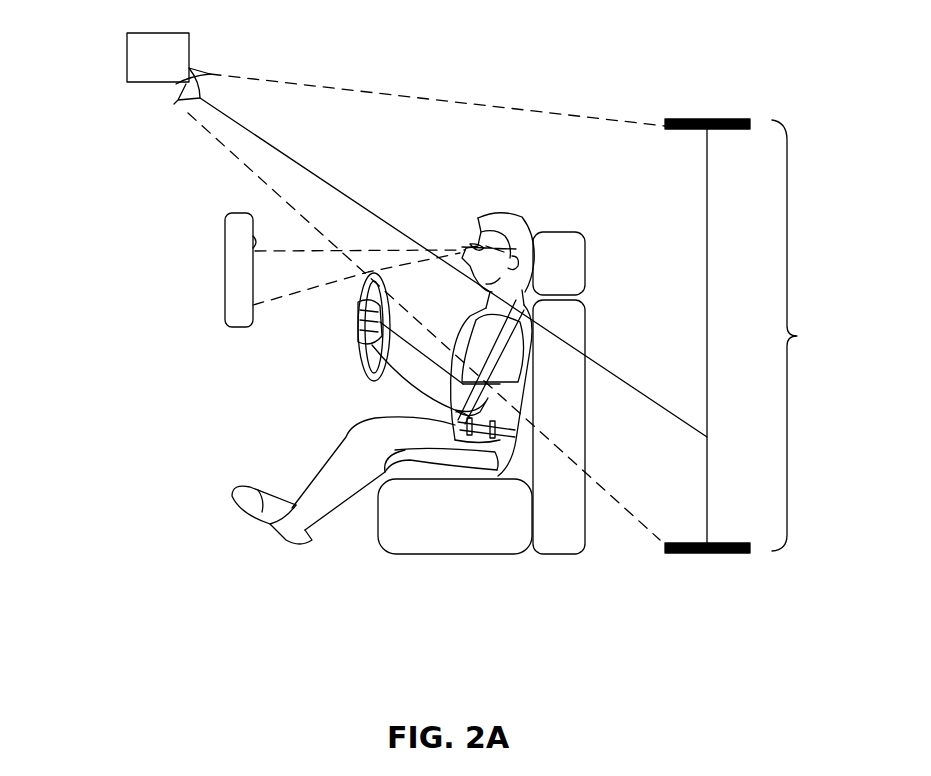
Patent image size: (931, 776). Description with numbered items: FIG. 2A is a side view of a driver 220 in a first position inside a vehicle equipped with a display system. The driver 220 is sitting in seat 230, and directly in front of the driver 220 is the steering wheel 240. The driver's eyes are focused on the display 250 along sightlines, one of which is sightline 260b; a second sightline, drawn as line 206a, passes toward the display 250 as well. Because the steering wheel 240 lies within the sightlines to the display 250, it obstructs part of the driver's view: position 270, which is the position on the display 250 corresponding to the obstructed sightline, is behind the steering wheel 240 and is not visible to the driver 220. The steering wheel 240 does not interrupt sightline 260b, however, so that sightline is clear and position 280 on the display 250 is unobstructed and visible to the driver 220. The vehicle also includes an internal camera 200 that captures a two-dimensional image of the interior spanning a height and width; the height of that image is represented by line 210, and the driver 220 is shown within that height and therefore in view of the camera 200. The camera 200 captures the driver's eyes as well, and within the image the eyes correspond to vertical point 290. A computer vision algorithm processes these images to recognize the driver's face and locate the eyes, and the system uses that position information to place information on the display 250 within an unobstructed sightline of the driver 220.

The internal camera 200 is at (127, 58).
The line representing image height 210 is at (764, 336).
The driver 220 is at (577, 185).
The seat 230 is at (484, 555).
The steering wheel 240 is at (365, 360).
The display 250 is at (226, 254).
The sightline 260b is at (374, 250).
The position on display 270 is at (252, 275).
The position on display 280 is at (254, 242).
The vertical point 290 is at (707, 355).
The line of sight 206a is at (318, 290).